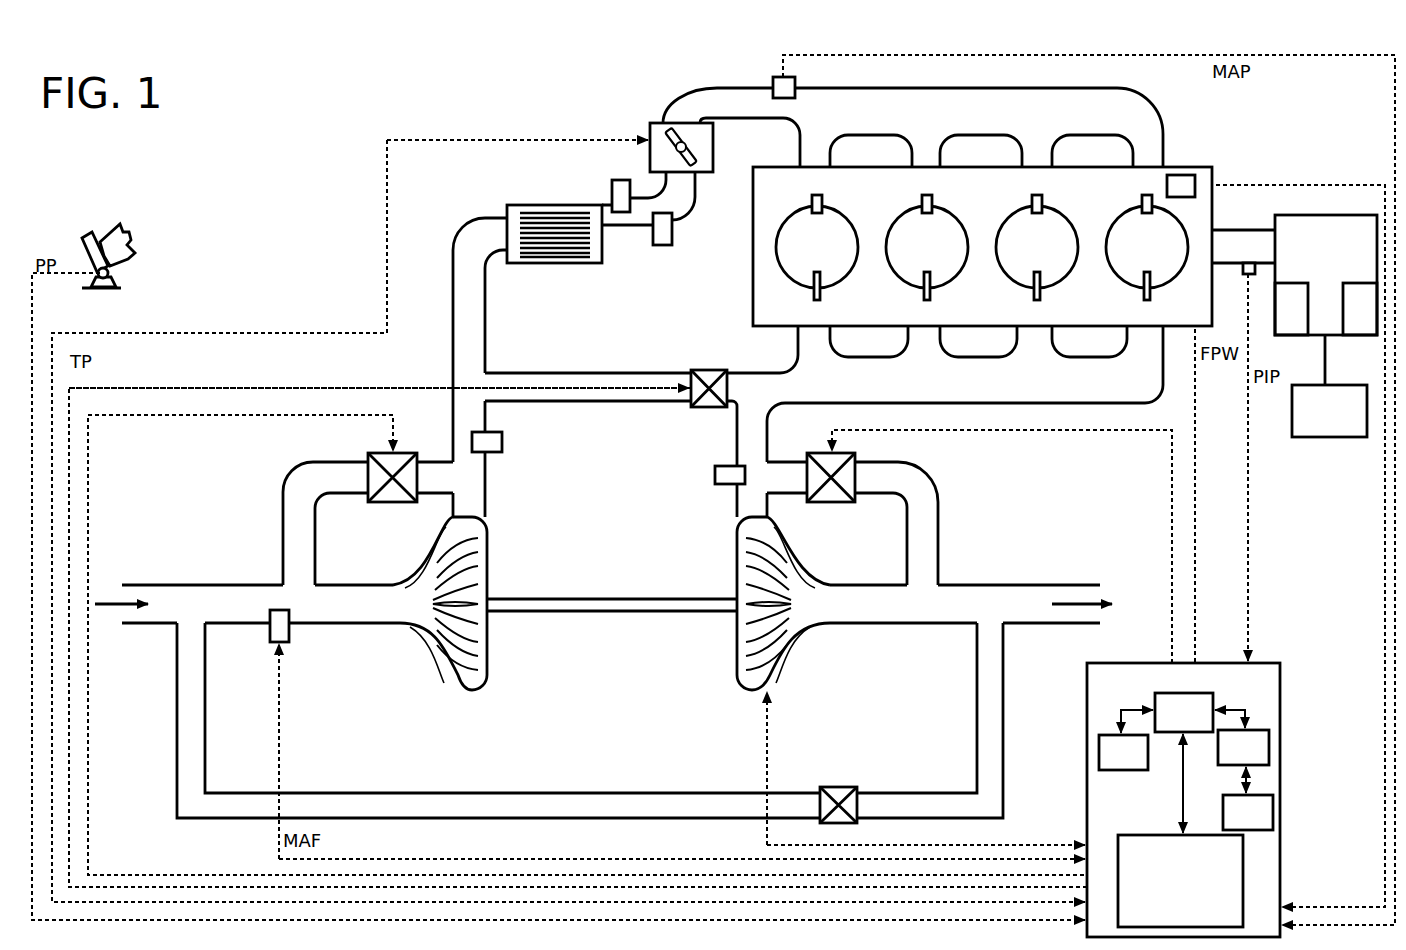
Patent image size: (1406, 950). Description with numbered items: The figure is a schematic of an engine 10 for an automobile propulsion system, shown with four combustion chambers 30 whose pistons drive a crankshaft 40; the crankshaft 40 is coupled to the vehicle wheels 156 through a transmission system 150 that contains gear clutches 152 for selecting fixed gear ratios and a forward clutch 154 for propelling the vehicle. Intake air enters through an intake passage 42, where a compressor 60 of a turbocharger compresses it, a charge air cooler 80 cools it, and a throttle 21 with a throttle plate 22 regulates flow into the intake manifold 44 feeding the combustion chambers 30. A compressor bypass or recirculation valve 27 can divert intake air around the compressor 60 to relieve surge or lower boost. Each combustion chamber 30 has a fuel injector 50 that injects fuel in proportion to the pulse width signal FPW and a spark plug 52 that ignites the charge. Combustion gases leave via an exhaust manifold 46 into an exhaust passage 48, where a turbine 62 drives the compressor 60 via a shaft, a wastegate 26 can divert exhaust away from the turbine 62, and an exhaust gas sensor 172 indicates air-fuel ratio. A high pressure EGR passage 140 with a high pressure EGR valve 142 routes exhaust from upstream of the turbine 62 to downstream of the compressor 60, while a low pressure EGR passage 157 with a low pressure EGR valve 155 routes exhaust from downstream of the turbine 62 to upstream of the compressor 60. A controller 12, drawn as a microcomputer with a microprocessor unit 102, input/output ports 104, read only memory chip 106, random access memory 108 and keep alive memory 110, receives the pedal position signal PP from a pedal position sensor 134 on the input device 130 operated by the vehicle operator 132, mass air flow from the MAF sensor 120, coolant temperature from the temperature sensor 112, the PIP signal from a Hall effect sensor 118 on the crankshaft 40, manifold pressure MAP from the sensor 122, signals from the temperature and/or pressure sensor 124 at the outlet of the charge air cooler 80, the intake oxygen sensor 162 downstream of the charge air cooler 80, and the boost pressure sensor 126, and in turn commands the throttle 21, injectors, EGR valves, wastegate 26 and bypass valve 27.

The engine 10 is at (1069, 199).
The controller 12 is at (1113, 814).
The throttle 21 is at (662, 122).
The throttle plate 22 is at (697, 156).
The wastegate 26 is at (857, 462).
The compressor bypass or recirculation valve 27 is at (364, 462).
The combustion chamber 30 is at (806, 259).
The crankshaft 40 is at (1233, 230).
The intake passage 42 is at (186, 616).
The intake manifold 44 is at (829, 124).
The exhaust manifold 46 is at (969, 394).
The exhaust passage 48 is at (740, 446).
The fuel injector 50 is at (813, 298).
The spark plug 52 is at (823, 198).
The compressor 60 is at (438, 643).
The turbine 62 is at (778, 557).
The charge air cooler 80 is at (577, 205).
The microprocessor unit 102 is at (1155, 700).
The input/output ports 104 is at (1194, 918).
The read only memory chip 106 is at (1099, 760).
The random access memory 108 is at (1257, 733).
The keep alive memory 110 is at (1267, 797).
The temperature sensor 112 is at (1195, 176).
The Hall effect sensor 118 is at (1243, 274).
The MAF sensor 120 is at (290, 626).
The manifold pressure sensor 122 is at (797, 77).
The temperature and/or pressure sensor 124 is at (665, 245).
The boost pressure sensor 126 is at (502, 442).
The input device 130 is at (82, 250).
The vehicle operator 132 is at (130, 239).
The pedal position sensor 134 is at (109, 273).
The high pressure EGR passage 140 is at (590, 372).
The high pressure EGR valve 142 is at (718, 370).
The transmission system 150 is at (1310, 262).
The gear clutches 152 is at (1276, 324).
The forward clutch 154 is at (1345, 324).
The low pressure EGR valve 155 is at (838, 786).
The vehicle wheels 156 is at (1313, 422).
The low pressure EGR passage 157 is at (513, 790).
The intake oxygen sensor 162 is at (612, 185).
The exhaust gas sensor 172 is at (715, 478).